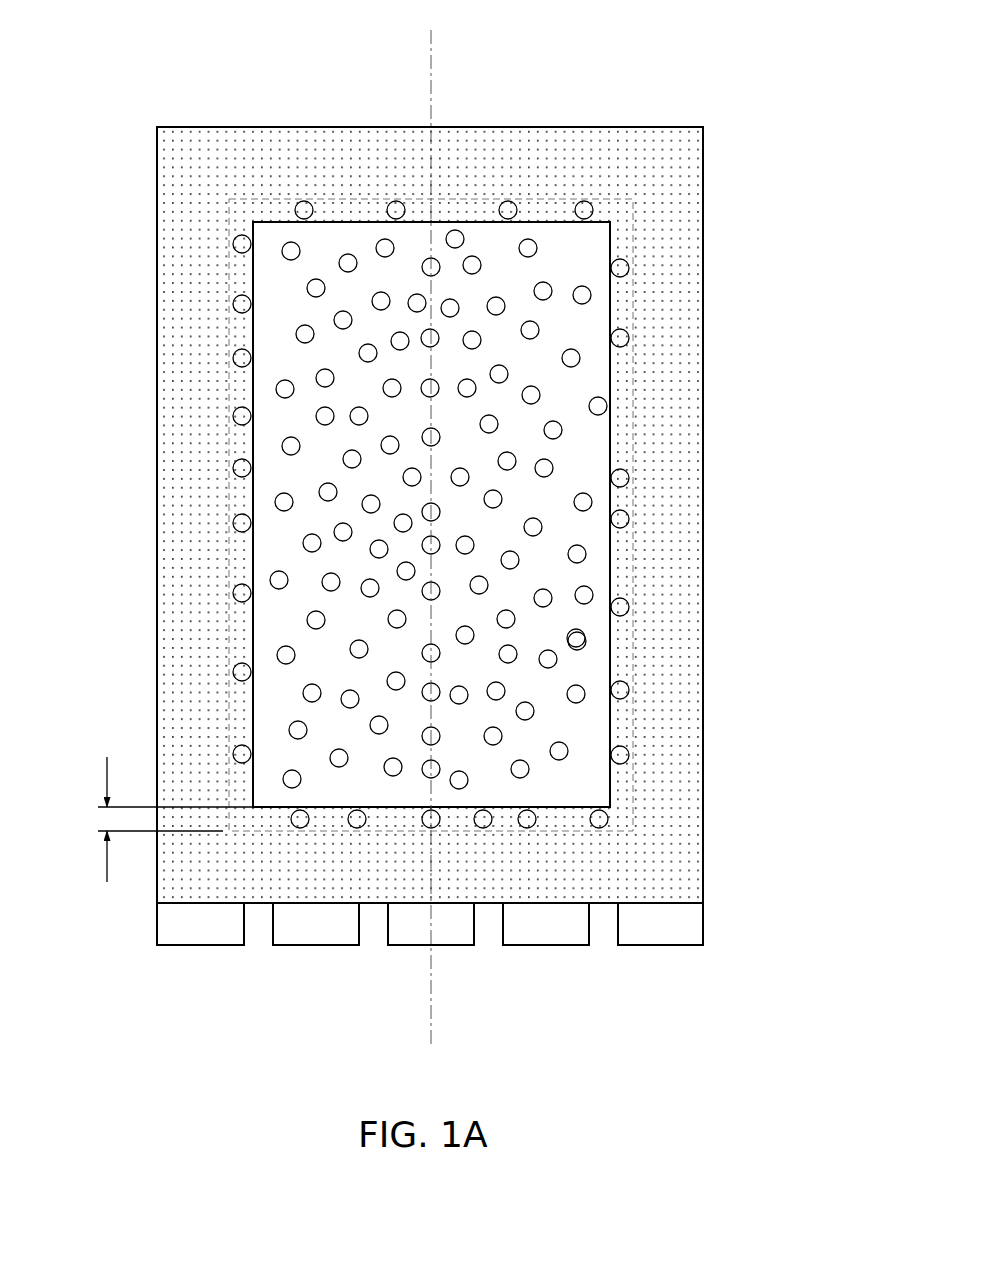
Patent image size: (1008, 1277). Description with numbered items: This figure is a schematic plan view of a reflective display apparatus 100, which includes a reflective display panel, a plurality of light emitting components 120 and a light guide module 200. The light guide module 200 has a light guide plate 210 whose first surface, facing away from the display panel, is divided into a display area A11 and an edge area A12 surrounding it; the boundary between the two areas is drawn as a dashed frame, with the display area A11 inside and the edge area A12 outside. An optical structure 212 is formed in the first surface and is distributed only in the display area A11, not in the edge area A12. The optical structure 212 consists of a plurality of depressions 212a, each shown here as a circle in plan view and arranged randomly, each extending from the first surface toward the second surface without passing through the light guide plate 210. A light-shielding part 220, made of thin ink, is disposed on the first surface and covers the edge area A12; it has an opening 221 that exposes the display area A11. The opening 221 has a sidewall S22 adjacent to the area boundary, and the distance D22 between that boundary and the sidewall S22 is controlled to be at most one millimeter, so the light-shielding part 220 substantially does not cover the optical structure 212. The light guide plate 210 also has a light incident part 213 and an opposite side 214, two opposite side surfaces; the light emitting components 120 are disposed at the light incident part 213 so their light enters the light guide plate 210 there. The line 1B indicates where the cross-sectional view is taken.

The reflective display apparatus 100 is at (77, 30).
The display area A11 is at (253, 198).
The edge area A12 is at (246, 157).
The light emitting components 120 is at (170, 921).
The light guide module 200 is at (805, 217).
The light guide plate 210 is at (590, 377).
The optical structure 212 is at (822, 526).
The depressions 212a is at (617, 522).
The light incident part 213 is at (221, 904).
The opposite side 214 is at (361, 128).
The light-shielding part 220 is at (694, 240).
The opening 221 is at (475, 248).
The sidewall S22 is at (563, 806).
The distance D22 is at (145, 819).
The line 1B- 1B is at (431, 38).